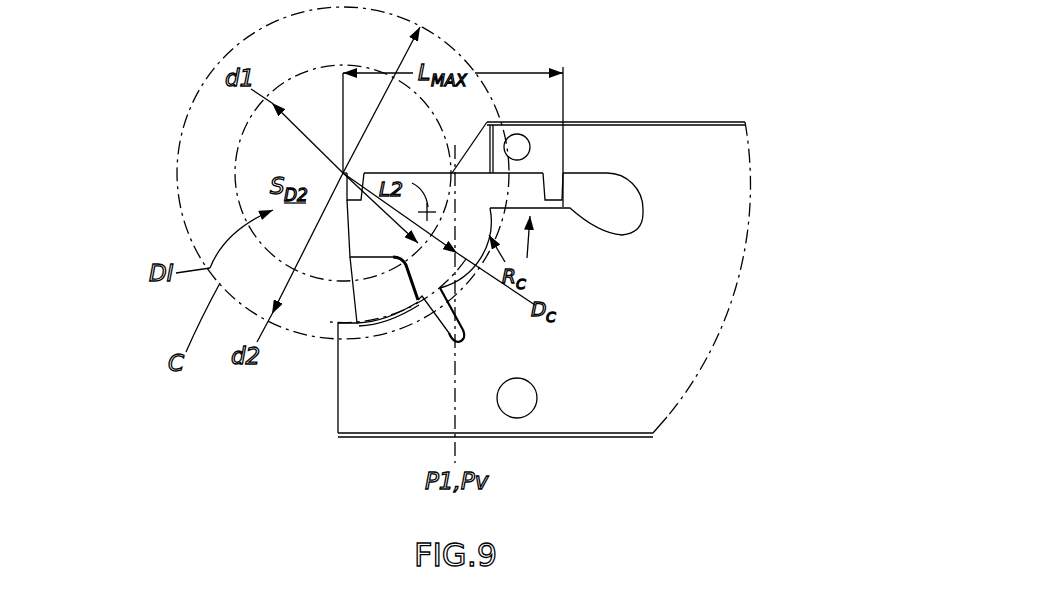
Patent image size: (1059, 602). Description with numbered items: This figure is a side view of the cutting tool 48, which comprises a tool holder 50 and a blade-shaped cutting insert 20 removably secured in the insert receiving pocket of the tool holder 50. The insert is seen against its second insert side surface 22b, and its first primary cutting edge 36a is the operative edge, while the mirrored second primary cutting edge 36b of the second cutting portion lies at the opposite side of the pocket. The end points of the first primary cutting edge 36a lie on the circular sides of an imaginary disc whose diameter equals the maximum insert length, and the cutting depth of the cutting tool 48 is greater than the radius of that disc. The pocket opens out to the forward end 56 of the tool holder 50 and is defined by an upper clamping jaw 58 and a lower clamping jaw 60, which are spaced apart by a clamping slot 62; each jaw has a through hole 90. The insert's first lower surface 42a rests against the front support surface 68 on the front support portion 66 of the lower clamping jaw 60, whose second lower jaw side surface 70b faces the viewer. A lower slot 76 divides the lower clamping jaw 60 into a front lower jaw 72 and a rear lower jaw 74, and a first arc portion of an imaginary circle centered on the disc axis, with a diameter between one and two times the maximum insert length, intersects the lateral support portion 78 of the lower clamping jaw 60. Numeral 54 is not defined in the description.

The cutting insert 20 is at (557, 222).
The second insert side surface 22b is at (429, 275).
The first primary cutting edge 36a is at (343, 173).
The second primary cutting edge 36b is at (583, 190).
The first lower surface 42a is at (380, 260).
The cutting tool 48 is at (712, 98).
The tool holder 50 is at (673, 288).
The outer circle of tool body 54 is at (690, 257).
The forward end 56 is at (333, 390).
The upper clamping jaw 58 is at (548, 148).
The lower clamping jaw 60 is at (548, 352).
The clamping slot 62 is at (588, 176).
The front support portion 66 is at (380, 295).
The front support surface 68 is at (365, 255).
The second lower jaw side surface 70b is at (413, 397).
The front lower jaw 72 is at (378, 350).
The rear lower jaw 74 is at (545, 272).
The lower slot 76 is at (462, 340).
The lateral support portion 78 is at (530, 193).
The through hole 90 is at (517, 134).